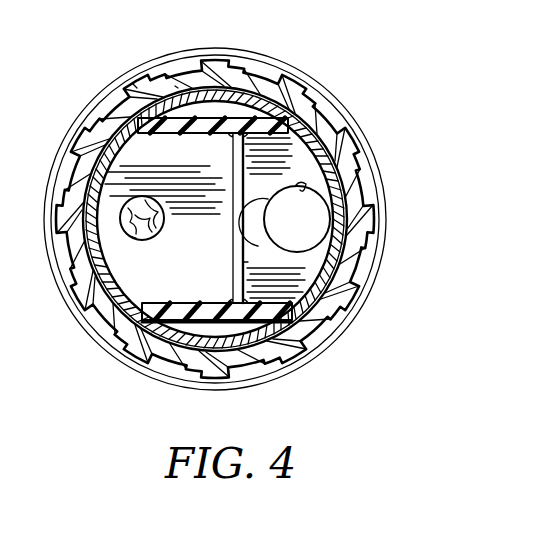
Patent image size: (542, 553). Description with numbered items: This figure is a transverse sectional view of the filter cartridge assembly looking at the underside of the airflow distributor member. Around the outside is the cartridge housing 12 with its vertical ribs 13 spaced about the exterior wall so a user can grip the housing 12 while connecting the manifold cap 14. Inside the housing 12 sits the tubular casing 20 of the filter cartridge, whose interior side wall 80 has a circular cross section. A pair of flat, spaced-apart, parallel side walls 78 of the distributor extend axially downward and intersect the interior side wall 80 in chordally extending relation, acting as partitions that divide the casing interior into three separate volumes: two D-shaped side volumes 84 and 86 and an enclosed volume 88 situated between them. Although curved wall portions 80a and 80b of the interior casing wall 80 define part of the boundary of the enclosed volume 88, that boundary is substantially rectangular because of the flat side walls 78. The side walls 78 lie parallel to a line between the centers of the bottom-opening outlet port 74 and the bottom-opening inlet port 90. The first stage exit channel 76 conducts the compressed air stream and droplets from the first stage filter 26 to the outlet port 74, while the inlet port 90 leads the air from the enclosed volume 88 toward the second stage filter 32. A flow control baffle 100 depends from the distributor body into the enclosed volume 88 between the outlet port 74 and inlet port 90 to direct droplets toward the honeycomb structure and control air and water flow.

The cartridge housing 12 is at (135, 84).
The vertical ribs 13 is at (255, 110).
The manifold cap 14 is at (94, 90).
The tubular casing 20 is at (180, 80).
The first stage filter 26 is at (245, 262).
The second stage filter 32 is at (131, 237).
The bottom-opening outlet port 74 is at (302, 185).
The first stage exit channel 76 is at (307, 212).
The side walls 78 is at (296, 92).
The interior side wall 80 is at (322, 92).
The curved wall portion 80a is at (314, 163).
The curved wall portion 80b is at (105, 318).
The side volume 84 is at (230, 336).
The side volume 86 is at (216, 106).
The enclosed volume 88 is at (132, 153).
The bottom-opening inlet port 90 is at (158, 240).
The flow control baffle 100 is at (233, 262).